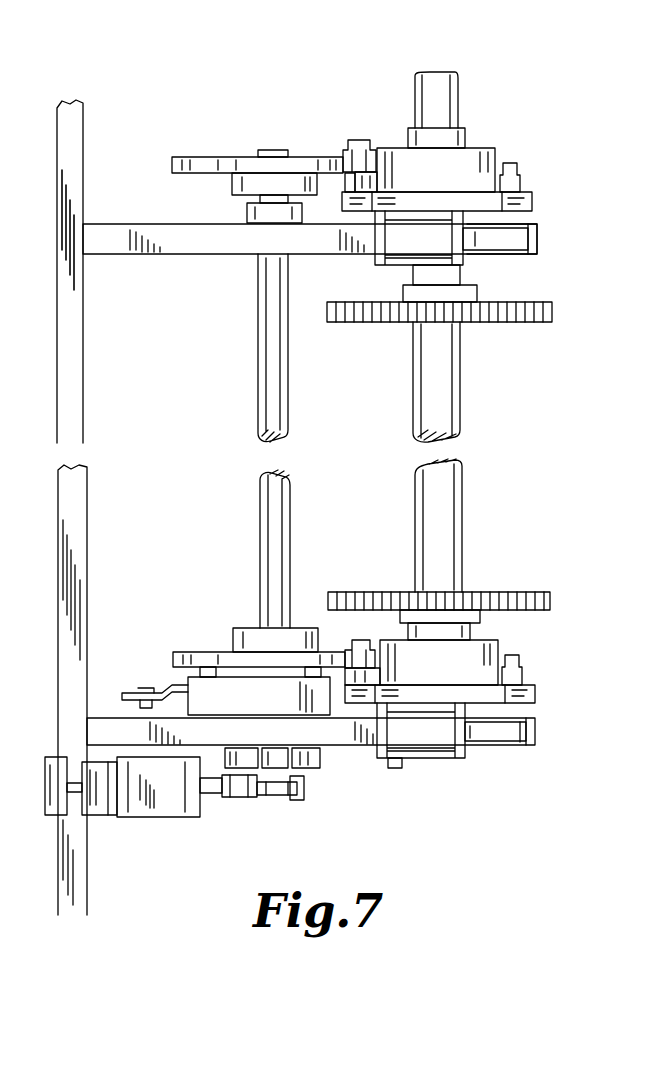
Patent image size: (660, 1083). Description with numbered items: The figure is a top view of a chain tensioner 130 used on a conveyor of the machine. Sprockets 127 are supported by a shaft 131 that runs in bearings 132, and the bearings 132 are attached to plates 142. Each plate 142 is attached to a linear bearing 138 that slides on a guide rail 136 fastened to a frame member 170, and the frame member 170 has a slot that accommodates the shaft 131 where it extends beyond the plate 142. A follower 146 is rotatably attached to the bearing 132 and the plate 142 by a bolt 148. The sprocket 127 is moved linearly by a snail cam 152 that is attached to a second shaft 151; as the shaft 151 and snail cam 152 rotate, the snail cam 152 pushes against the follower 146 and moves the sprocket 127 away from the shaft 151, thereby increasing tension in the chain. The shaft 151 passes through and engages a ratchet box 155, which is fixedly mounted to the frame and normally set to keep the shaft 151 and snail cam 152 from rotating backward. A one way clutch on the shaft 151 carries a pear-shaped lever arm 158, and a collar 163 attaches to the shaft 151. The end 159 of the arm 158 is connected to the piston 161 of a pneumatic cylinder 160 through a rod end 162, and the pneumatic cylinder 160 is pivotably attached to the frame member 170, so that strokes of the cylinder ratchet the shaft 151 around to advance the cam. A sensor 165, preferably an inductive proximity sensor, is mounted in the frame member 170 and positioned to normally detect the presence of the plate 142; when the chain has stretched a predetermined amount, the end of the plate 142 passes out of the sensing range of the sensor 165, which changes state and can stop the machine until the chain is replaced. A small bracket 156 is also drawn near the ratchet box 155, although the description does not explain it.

The sprocket 127 is at (530, 322).
The chain tensioner 130 is at (480, 792).
The shaft 131 is at (462, 500).
The bearing 132 is at (490, 148).
The guide rail 136 is at (510, 245).
The linear bearing 138 is at (440, 782).
The plate 142 is at (535, 196).
The follower 146 is at (392, 160).
The bolt 148 is at (350, 142).
The shaft 151 is at (283, 405).
The snail cam 152 is at (195, 157).
The ratchet box 155 is at (278, 707).
The bracket 156 is at (142, 690).
The lever arm 158 is at (318, 757).
The end of arm 159 is at (295, 782).
The pneumatic cylinder 160 is at (160, 817).
The piston 161 is at (226, 795).
The rod end 162 is at (278, 797).
The collar 163 is at (300, 800).
The sensor 165 is at (394, 768).
The frame member 170 is at (222, 243).